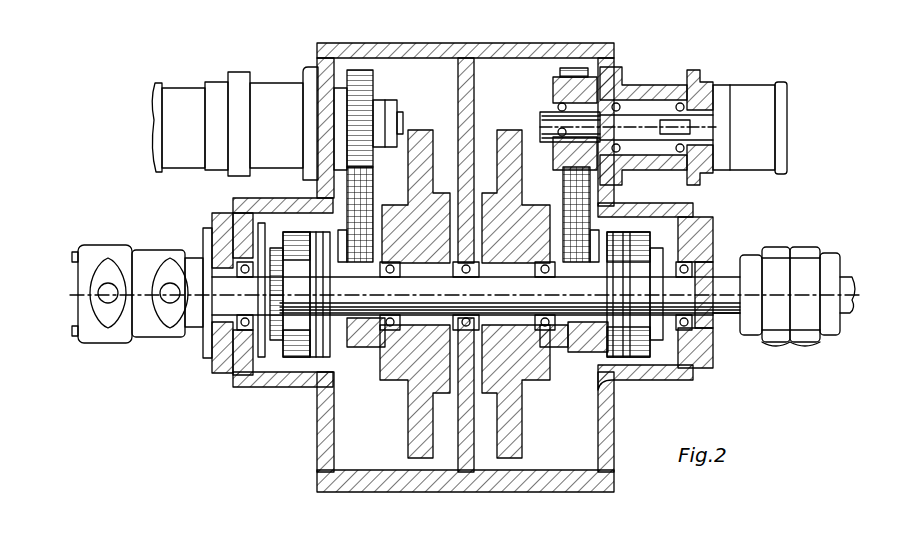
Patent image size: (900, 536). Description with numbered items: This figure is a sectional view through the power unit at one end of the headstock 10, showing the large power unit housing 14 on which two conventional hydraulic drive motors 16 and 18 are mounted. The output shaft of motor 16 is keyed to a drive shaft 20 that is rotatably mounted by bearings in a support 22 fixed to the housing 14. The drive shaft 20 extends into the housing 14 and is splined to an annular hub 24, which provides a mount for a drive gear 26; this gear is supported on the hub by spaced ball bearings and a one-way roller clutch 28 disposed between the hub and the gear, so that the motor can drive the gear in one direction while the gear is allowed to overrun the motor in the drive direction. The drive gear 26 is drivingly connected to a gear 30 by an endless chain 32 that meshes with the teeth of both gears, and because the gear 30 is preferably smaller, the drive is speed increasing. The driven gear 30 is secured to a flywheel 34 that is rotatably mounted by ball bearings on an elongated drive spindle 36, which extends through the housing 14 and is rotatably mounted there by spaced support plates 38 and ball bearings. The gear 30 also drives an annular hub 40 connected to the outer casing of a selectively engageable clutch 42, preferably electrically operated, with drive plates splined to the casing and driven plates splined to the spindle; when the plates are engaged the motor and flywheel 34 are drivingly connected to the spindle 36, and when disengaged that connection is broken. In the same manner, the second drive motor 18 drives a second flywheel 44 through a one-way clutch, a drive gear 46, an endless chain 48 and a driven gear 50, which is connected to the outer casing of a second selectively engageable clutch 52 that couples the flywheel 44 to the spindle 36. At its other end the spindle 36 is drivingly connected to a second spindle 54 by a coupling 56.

The headstock 10 is at (308, 58).
The power unit housing 14 is at (522, 50).
The hydraulic motor 16 is at (745, 98).
The hydraulic motor 18 is at (186, 98).
The drive shaft 20 is at (648, 112).
The support 22 is at (690, 72).
The annular hub 24 is at (556, 114).
The drive gear 26 is at (563, 86).
The one-way roller clutch 28 is at (643, 111).
The gear 30 is at (586, 350).
The endless chain 32 is at (565, 200).
The flywheel 34 is at (506, 130).
The drive spindle 36 is at (548, 332).
The support plates 38 is at (216, 376).
The annular hub 40 is at (622, 240).
The selectively engageable clutch 42 is at (638, 355).
The second flywheel 44 is at (424, 128).
The drive gear 46 is at (372, 98).
The endless chain 48 is at (373, 176).
The driven gear 50 is at (368, 342).
The selectively engageable clutch 52 is at (300, 360).
The second spindle 54 is at (852, 283).
The coupling 56 is at (805, 340).